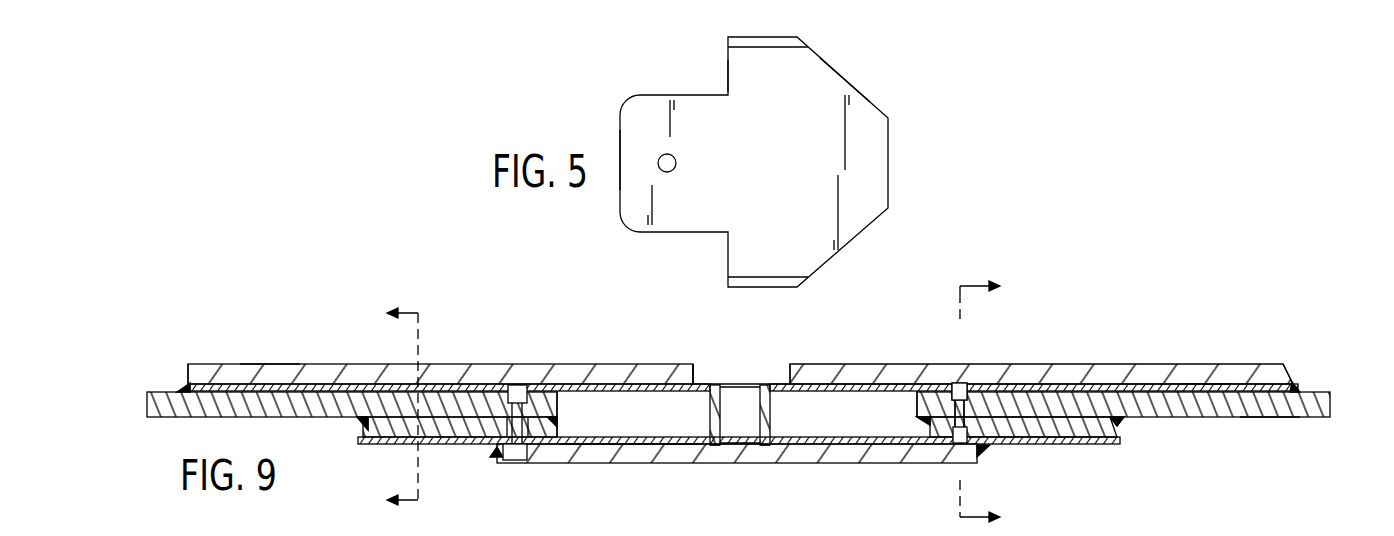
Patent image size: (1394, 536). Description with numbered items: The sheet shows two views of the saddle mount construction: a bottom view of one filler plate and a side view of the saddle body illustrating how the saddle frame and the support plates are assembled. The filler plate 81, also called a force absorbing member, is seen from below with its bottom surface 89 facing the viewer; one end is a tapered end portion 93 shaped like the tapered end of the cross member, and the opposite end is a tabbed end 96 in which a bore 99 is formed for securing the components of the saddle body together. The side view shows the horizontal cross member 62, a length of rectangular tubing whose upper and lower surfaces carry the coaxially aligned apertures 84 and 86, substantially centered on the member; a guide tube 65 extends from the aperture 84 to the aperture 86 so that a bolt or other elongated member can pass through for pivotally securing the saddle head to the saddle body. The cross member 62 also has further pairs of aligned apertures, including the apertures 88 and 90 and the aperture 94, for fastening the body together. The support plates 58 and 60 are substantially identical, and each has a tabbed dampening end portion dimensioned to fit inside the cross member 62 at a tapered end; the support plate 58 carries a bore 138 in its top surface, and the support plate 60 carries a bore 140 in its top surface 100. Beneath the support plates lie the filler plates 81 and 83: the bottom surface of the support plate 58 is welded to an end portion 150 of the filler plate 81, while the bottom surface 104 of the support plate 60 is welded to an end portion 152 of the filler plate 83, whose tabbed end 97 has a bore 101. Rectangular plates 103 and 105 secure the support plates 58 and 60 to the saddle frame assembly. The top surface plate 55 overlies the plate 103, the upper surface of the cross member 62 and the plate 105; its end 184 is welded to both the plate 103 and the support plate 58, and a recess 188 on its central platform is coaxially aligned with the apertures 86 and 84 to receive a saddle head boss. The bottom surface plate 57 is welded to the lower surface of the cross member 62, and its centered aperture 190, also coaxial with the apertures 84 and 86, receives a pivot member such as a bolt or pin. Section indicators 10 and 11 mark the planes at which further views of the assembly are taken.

In FIG. 9, the section line 10- 10 is at (400, 407).
In FIG. 9, the section line 11- 11 is at (993, 391).
In FIG. 9, the top surface plate 55 is at (580, 370).
In FIG. 9, the bottom surface plate 57 is at (640, 458).
In FIG. 9, the support plate 58 is at (160, 400).
In FIG. 9, the support plate 60 is at (1317, 398).
In FIG. 9, the horizontal cross member 62 is at (628, 425).
In FIG. 9, the guide tube 65 is at (758, 418).
In FIG. 5, the filler plate 81 is at (889, 160).
In FIG. 9, the filler plate 81 is at (375, 438).
In FIG. 9, the filler plate 83 is at (1087, 427).
In FIG. 9, the aperture 84 is at (720, 443).
In FIG. 9, the aperture 86 is at (758, 387).
In FIG. 9, the aperture 88 is at (512, 388).
In FIG. 5, the bottom surface 89 is at (722, 122).
In FIG. 9, the aperture 90 is at (513, 460).
In FIG. 5, the tapered end portion 93 is at (858, 93).
In FIG. 9, the aperture 94 is at (955, 440).
In FIG. 5, the tabbed end 96 is at (620, 123).
In FIG. 9, the tabbed end 97 is at (987, 427).
In FIG. 5, the bore 99 is at (677, 163).
In FIG. 9, the bore 99 is at (490, 437).
In FIG. 9, the top surface 100 is at (1309, 390).
In FIG. 9, the bore 101 is at (923, 430).
In FIG. 9, the rectangular plate 103 is at (253, 385).
In FIG. 9, the bottom surface 104 is at (1265, 418).
In FIG. 9, the rectangular plate 105 is at (1200, 385).
In FIG. 9, the bore 138 is at (553, 412).
In FIG. 9, the bore 140 is at (966, 395).
In FIG. 9, the end portion 150 is at (357, 425).
In FIG. 9, the end portion 152 is at (1120, 420).
In FIG. 9, the end 184 is at (190, 372).
In FIG. 9, the recess 188 is at (697, 372).
In FIG. 9, the aperture 190 is at (753, 455).